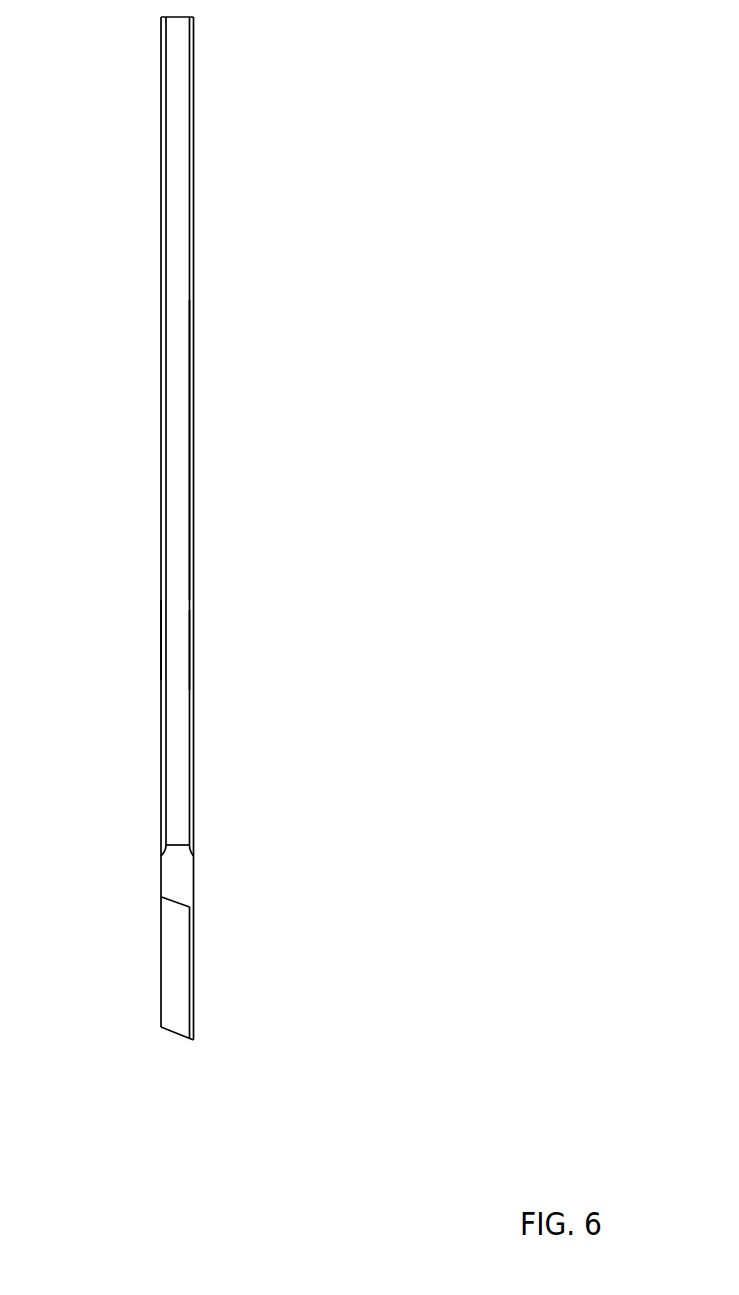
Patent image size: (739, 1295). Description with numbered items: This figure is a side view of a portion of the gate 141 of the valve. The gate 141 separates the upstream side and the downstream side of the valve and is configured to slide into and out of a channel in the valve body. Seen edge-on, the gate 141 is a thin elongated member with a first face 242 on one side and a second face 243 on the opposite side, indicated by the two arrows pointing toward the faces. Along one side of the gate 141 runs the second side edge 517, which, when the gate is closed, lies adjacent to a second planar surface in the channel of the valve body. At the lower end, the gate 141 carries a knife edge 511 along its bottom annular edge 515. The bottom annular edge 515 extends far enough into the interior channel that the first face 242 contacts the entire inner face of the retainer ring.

The gate 141 is at (173, 230).
The second side edge 517 is at (179, 472).
The first face 242 is at (150, 637).
The second face 243 is at (207, 649).
The knife edge 511 is at (170, 968).
The bottom annular edge 515 is at (191, 1041).